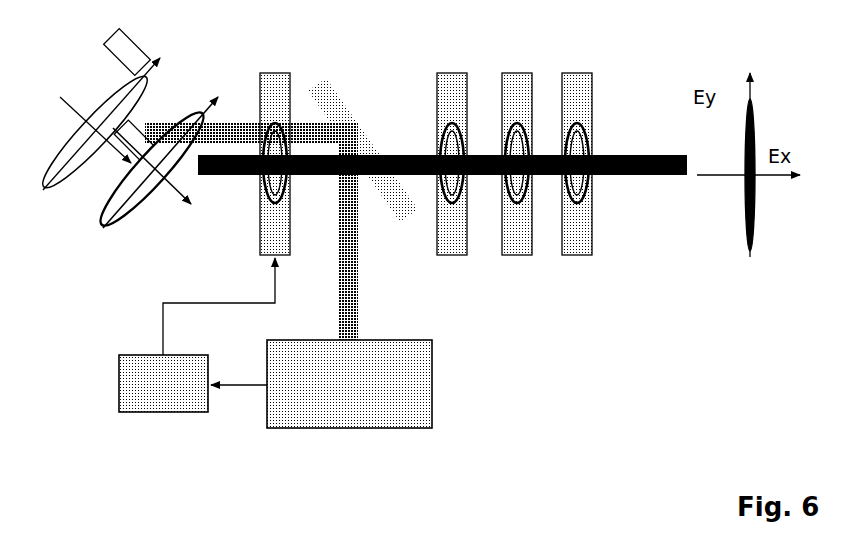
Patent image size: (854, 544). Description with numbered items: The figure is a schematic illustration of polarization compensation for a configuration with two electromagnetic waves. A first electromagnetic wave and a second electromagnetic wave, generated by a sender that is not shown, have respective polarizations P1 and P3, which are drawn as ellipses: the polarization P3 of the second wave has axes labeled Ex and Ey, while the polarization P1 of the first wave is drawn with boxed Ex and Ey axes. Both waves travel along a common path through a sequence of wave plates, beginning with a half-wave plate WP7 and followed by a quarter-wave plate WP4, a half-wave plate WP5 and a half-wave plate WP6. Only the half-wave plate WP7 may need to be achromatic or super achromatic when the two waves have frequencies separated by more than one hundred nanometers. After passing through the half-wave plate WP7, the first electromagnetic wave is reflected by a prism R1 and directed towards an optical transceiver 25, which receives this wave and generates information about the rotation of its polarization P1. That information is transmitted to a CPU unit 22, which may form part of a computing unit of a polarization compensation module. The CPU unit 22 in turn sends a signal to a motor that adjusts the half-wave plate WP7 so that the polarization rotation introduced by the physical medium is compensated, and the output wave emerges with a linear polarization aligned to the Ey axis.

The polarization of first electromagnetic wave P1 is at (62, 197).
The polarization of second electromagnetic wave P3 is at (123, 230).
The half-wave plate WP7 is at (265, 232).
The prism R1 is at (332, 97).
The quarter-wave plate WP4 is at (452, 248).
The half-wave plate WP5 is at (517, 248).
The half-wave plate WP6 is at (578, 248).
The CPU unit 22 is at (119, 385).
The optical transceiver 25 is at (432, 375).